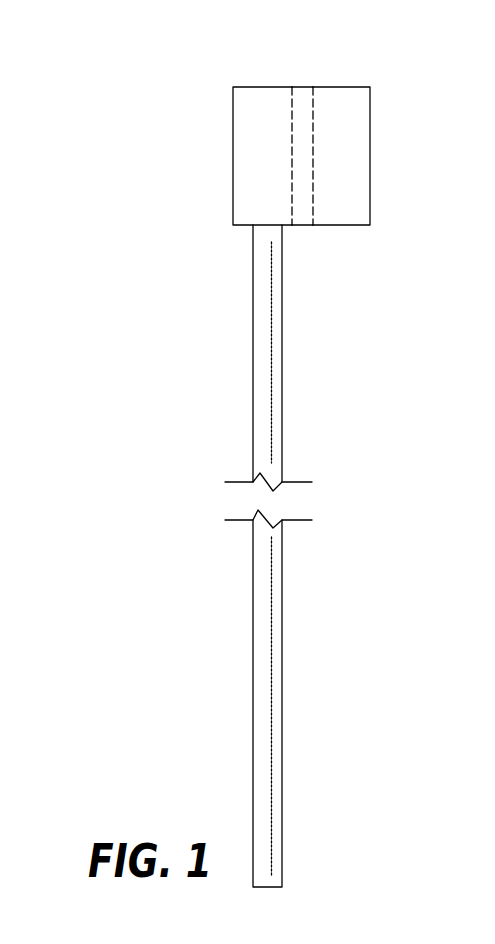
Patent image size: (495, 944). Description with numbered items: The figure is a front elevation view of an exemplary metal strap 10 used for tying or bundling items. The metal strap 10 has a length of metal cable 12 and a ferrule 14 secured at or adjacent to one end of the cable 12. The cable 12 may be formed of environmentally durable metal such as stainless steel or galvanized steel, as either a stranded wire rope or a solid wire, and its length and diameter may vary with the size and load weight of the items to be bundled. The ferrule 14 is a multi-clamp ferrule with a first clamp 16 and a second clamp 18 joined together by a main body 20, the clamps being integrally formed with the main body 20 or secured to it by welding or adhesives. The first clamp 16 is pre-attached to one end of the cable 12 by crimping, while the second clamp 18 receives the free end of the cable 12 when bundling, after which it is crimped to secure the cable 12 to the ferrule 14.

The metal strap 10 is at (316, 487).
The metal cable 12 is at (240, 322).
The ferrule 14 is at (316, 195).
The first clamp 16 is at (245, 131).
The second clamp 18 is at (355, 185).
The main body 20 is at (300, 215).